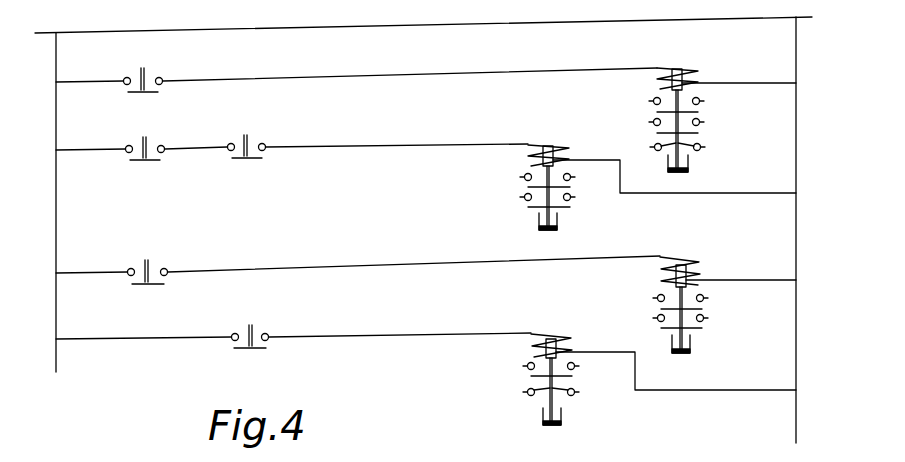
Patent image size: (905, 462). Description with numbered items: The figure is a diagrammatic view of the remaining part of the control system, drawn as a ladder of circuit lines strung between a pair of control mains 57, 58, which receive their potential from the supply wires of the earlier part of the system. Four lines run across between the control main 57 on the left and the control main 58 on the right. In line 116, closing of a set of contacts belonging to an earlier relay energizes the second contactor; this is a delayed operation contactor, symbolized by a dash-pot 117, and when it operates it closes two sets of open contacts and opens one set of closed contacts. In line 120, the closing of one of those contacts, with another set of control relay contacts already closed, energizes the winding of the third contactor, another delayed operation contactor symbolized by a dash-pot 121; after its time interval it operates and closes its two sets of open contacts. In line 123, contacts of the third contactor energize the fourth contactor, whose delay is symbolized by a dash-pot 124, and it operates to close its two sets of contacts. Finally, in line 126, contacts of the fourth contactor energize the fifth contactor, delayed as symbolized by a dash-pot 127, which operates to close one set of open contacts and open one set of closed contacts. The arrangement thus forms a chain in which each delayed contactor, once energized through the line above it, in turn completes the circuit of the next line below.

The control main 57 is at (56, 53).
The control main 58 is at (796, 62).
The line 116 is at (65, 83).
The line 120 is at (66, 151).
The line 123 is at (67, 274).
The line 126 is at (67, 340).
The dash-pot 117 is at (690, 170).
The dash-pot 121 is at (560, 228).
The dash-pot 124 is at (692, 351).
The dash-pot 127 is at (564, 423).